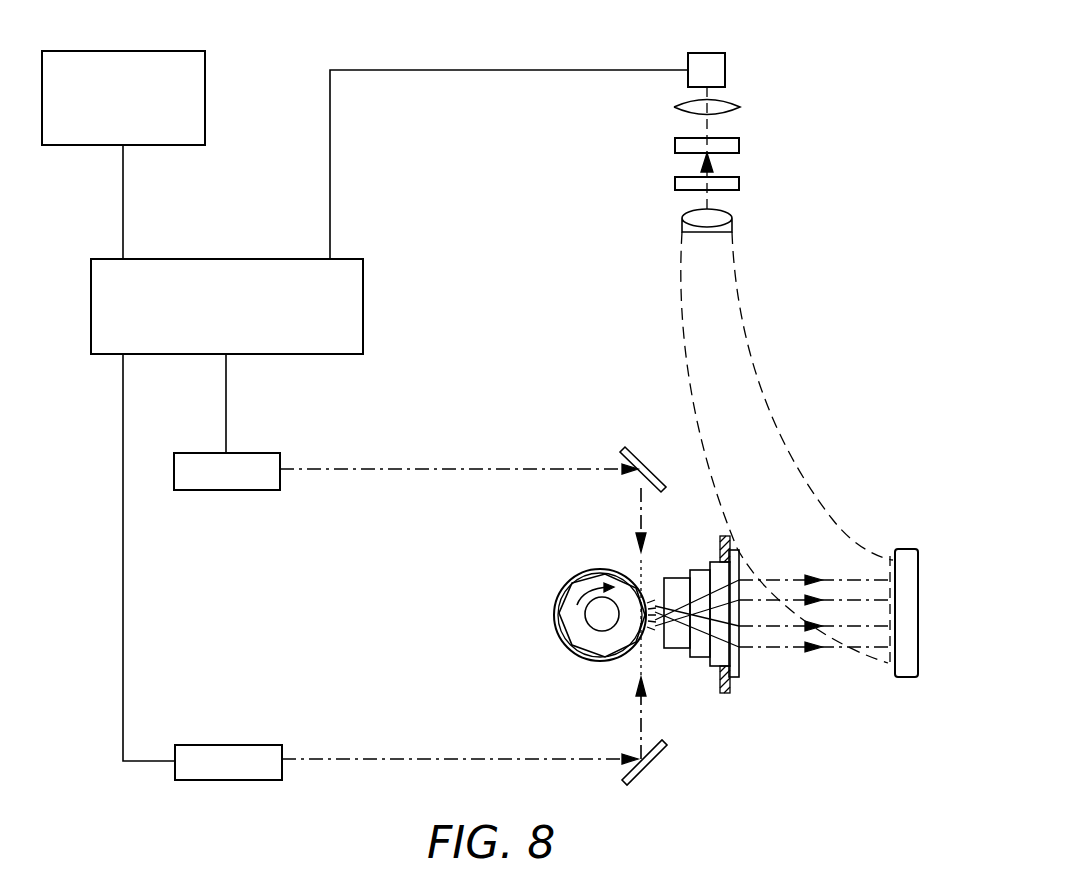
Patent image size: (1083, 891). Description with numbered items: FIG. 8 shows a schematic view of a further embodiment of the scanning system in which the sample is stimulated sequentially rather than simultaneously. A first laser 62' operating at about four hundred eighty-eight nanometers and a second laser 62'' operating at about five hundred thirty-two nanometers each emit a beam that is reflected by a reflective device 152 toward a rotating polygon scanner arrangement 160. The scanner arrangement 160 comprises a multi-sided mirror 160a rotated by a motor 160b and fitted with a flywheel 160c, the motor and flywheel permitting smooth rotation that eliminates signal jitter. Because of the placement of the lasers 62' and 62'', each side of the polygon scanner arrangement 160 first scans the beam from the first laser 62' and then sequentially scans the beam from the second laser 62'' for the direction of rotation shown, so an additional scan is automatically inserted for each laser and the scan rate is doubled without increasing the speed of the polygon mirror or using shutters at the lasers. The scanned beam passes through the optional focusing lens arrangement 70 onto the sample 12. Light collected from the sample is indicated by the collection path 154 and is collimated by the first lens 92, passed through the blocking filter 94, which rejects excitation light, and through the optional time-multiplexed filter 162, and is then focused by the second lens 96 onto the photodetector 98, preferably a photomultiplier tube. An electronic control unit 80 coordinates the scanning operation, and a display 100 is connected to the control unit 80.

The display 100 is at (143, 50).
The electronic control unit 80 is at (222, 258).
The first laser 62' is at (226, 489).
The second laser 62'' is at (228, 745).
The reflective device 152 is at (638, 458).
The polygon scanner arrangement 160 is at (485, 617).
The multi-sided mirror 160a is at (575, 607).
The motor 160b is at (605, 623).
The flywheel 160c is at (587, 582).
The focusing lens 70 is at (703, 546).
The sample 12 is at (906, 548).
The photodetector 98 is at (712, 52).
The second lens 96 is at (735, 107).
The blocking filter 94 is at (735, 138).
The time-multiplexed filter 162 is at (735, 177).
The first lens 92 is at (720, 215).
The light collection path 154 is at (755, 377).